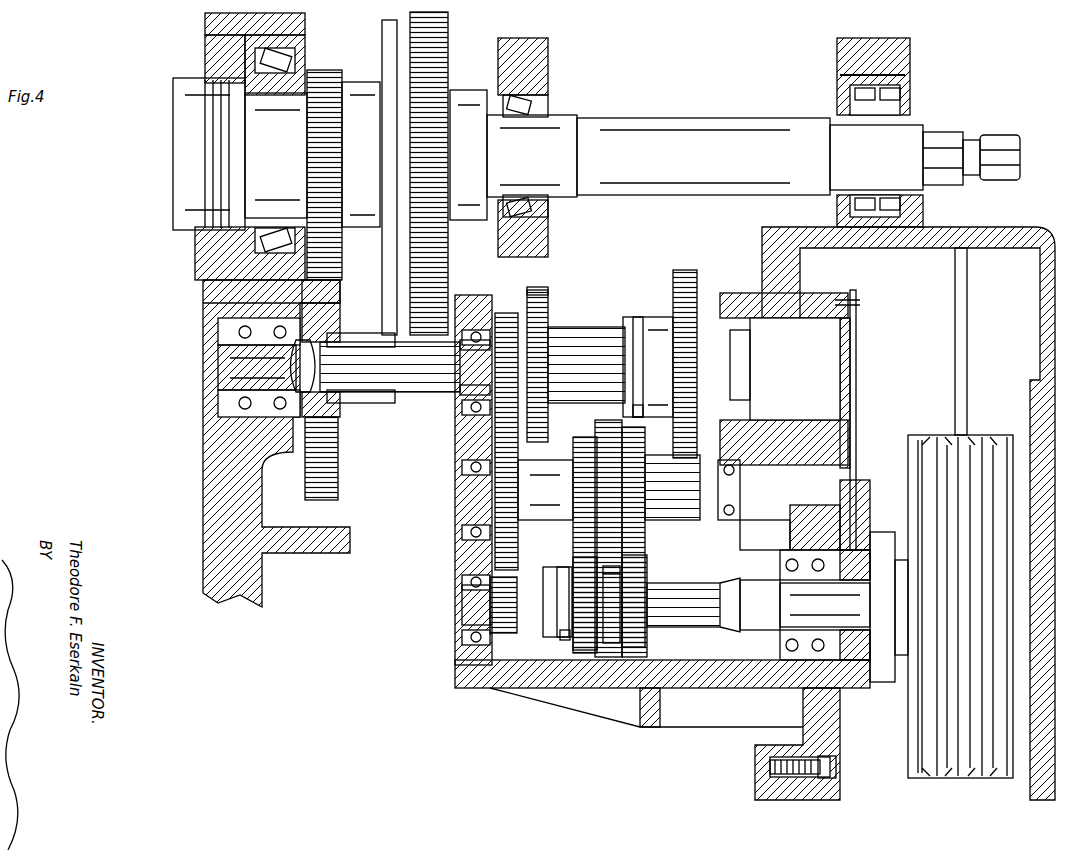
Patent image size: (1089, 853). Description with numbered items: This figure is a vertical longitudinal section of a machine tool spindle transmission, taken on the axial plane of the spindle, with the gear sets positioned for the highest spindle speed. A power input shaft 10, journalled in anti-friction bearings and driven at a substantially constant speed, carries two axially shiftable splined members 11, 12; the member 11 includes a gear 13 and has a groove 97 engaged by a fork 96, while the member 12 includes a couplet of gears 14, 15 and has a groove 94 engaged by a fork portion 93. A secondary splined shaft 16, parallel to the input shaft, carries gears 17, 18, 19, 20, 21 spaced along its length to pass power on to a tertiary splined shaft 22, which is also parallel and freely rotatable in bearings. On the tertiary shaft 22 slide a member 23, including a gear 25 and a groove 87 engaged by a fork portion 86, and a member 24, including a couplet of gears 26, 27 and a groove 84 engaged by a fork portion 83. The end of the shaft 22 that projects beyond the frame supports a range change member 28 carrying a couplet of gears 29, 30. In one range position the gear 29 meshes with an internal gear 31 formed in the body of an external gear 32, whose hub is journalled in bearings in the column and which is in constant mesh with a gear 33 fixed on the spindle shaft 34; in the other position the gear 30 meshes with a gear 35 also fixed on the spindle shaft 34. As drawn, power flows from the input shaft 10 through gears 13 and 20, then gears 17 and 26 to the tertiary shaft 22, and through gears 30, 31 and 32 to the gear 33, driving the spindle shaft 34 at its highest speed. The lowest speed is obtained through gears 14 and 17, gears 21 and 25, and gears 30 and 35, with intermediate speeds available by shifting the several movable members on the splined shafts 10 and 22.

The power input shaft 10 is at (768, 586).
The axially shiftable member 11 is at (657, 649).
The axially shiftable member 12 is at (556, 590).
The gear 13 is at (638, 585).
The gear 14 is at (510, 633).
The gear 15 is at (576, 642).
The secondary splined shaft 16 is at (718, 494).
The gear 17 is at (545, 490).
The gear 18 is at (578, 497).
The gear 19 is at (603, 423).
The gear 20 is at (636, 457).
The gear 21 is at (660, 495).
The tertiary splined shaft 22 is at (590, 346).
The member 23 is at (657, 326).
The member 24 is at (550, 320).
The gear 25 is at (689, 297).
The gear 26 is at (507, 313).
The gear 27 is at (537, 288).
The axially shiftable member 28 is at (378, 398).
The gear 29 is at (263, 367).
The gear 30 is at (384, 333).
The internal gear 31 is at (302, 366).
The external gear 32 is at (330, 483).
The gear 33 is at (333, 168).
The spindle shaft 34 is at (622, 130).
The gear 35 is at (440, 281).
The fork portion 83 is at (505, 412).
The groove 84 is at (500, 400).
The fork portion 86 is at (641, 414).
The groove 87 is at (637, 379).
The fork portion 93 is at (565, 642).
The groove 94 is at (567, 566).
The fork 96 is at (640, 568).
The groove 97 is at (609, 618).